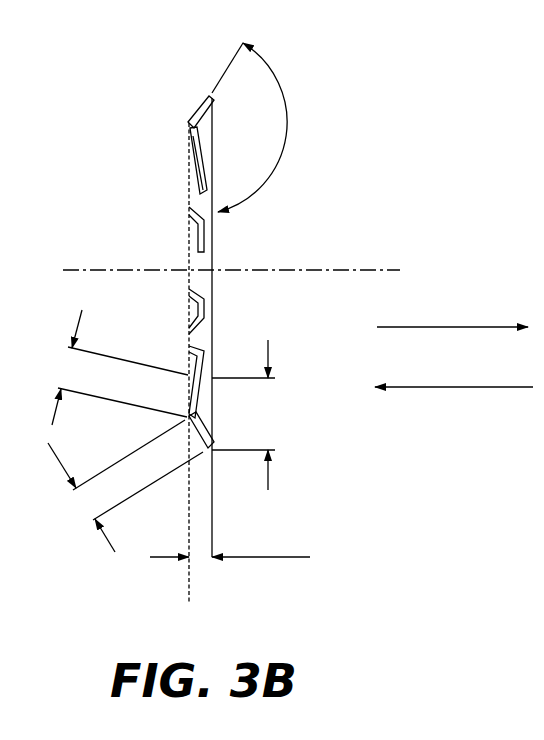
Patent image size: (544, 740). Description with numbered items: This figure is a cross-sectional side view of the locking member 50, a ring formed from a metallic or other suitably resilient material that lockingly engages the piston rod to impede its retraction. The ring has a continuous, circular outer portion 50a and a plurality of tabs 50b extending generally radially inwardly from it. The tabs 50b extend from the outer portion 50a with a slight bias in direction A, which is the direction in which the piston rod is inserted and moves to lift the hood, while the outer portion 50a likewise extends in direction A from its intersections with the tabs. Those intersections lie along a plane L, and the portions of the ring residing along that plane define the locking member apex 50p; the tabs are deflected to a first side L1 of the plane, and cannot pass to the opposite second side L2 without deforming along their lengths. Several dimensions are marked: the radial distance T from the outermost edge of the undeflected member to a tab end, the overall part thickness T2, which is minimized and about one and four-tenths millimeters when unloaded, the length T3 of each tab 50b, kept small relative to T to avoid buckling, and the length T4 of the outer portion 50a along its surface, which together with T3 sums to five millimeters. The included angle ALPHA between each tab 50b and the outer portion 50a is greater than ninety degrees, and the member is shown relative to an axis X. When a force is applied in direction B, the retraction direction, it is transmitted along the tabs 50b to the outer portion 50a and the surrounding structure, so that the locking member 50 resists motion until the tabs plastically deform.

The locking member 50 is at (200, 350).
The outer portion 50a is at (210, 97).
The locking member apex 50p is at (188, 122).
The tabs 50b is at (205, 233).
The axis X is at (84, 270).
The angle alpha ALPHA is at (315, 127).
The radial distance T is at (250, 415).
The overall part thickness T2 is at (242, 559).
The length of tab T3 is at (111, 367).
The length of outer portion T4 is at (125, 486).
The plane L is at (187, 583).
The first side of plane L L1 is at (263, 591).
The second side of plane L L2 is at (94, 590).
The direction A is at (452, 310).
The direction B is at (454, 371).